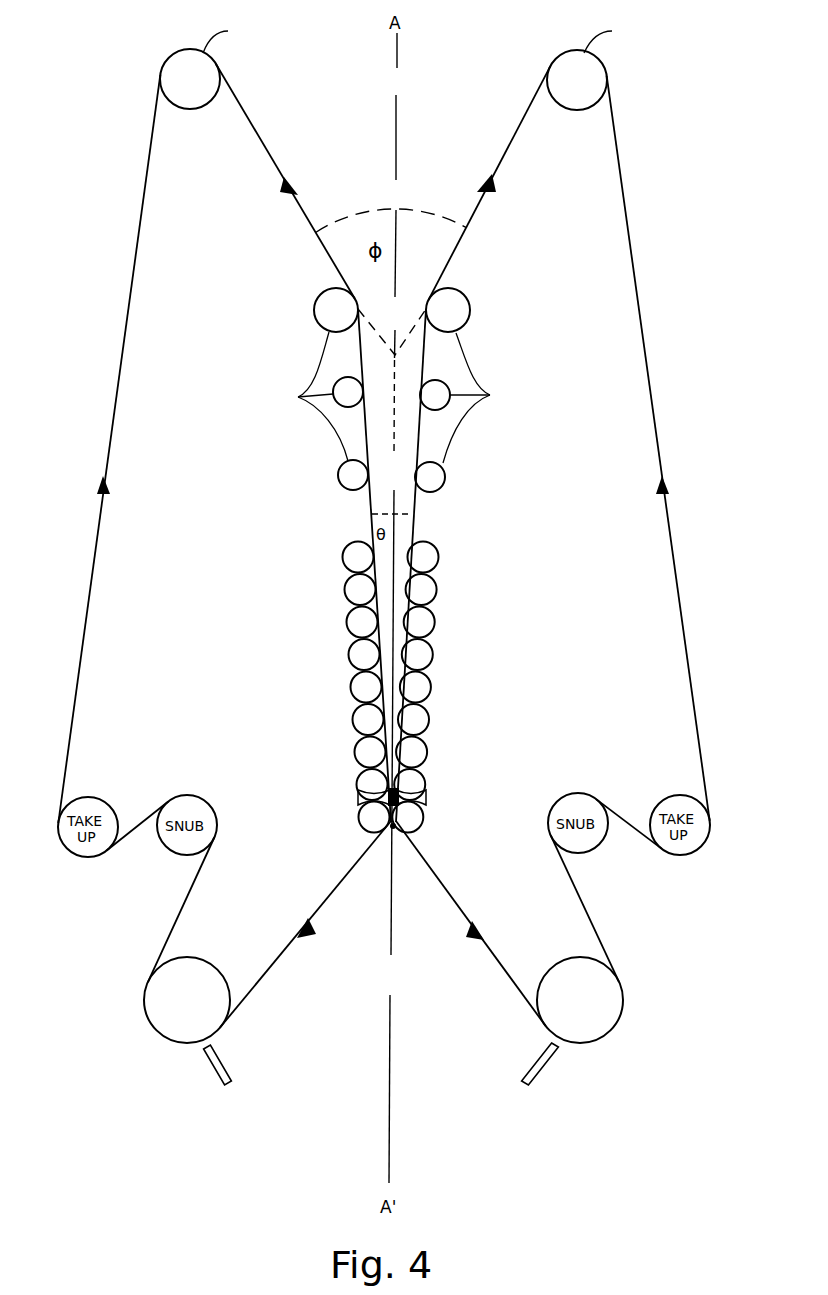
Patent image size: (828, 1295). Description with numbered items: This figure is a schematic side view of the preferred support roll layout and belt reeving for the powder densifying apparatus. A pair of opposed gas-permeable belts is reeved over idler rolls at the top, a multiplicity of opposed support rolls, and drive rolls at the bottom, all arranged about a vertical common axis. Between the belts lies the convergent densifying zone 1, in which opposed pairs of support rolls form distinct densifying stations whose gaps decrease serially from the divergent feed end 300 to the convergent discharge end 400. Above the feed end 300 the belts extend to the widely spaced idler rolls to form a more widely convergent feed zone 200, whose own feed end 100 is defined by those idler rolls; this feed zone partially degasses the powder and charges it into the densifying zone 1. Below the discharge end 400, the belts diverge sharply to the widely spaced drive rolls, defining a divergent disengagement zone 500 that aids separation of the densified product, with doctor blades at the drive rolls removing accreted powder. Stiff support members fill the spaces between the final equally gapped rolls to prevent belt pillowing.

The feed end of feed zone 100 is at (403, 91).
The convergent feed zone 200 is at (402, 204).
The divergent feed end of densifying zone 300 is at (401, 320).
The convergent discharge end of densifying zone 400 is at (385, 838).
The divergent disengagement zone 500 is at (395, 989).
The convergent densifying zone 1 is at (402, 485).